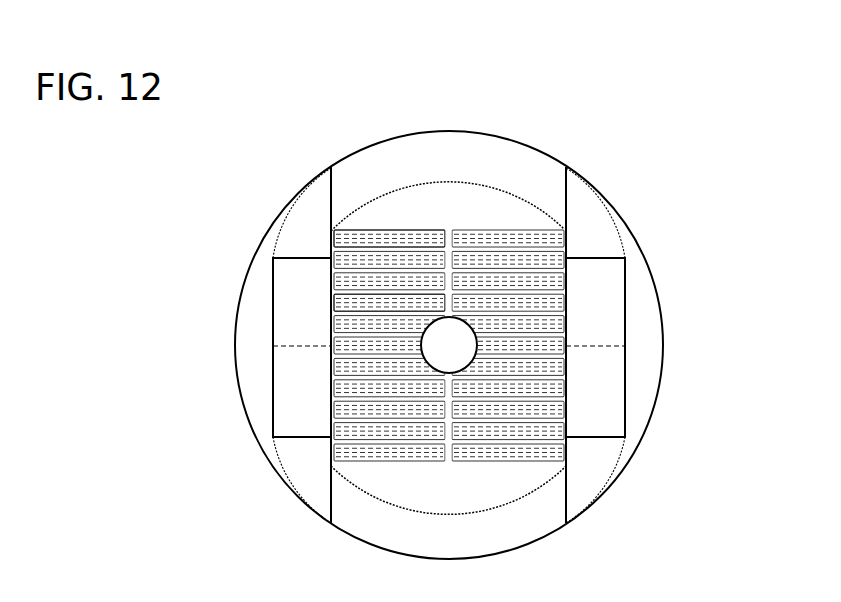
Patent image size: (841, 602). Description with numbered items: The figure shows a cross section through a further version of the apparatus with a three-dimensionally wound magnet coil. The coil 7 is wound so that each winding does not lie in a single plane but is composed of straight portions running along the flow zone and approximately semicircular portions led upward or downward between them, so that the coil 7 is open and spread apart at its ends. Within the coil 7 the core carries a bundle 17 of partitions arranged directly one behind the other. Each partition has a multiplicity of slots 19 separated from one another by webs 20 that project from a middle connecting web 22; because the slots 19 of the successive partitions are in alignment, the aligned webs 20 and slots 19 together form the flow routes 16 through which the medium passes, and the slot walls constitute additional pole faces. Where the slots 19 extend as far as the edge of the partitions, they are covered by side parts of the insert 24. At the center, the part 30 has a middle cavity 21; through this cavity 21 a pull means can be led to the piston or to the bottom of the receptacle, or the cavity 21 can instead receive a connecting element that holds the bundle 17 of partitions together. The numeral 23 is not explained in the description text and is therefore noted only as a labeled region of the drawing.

The coil 7 is at (610, 282).
The flow routes 16 is at (389, 232).
The bundle 17 is at (337, 360).
The slots 19 is at (350, 293).
The webs 20 is at (340, 248).
The middle cavity 21 is at (447, 350).
The connecting web 22 is at (450, 245).
The housing segment 23 is at (446, 200).
The insert 24 is at (613, 450).
The part 30 is at (535, 180).